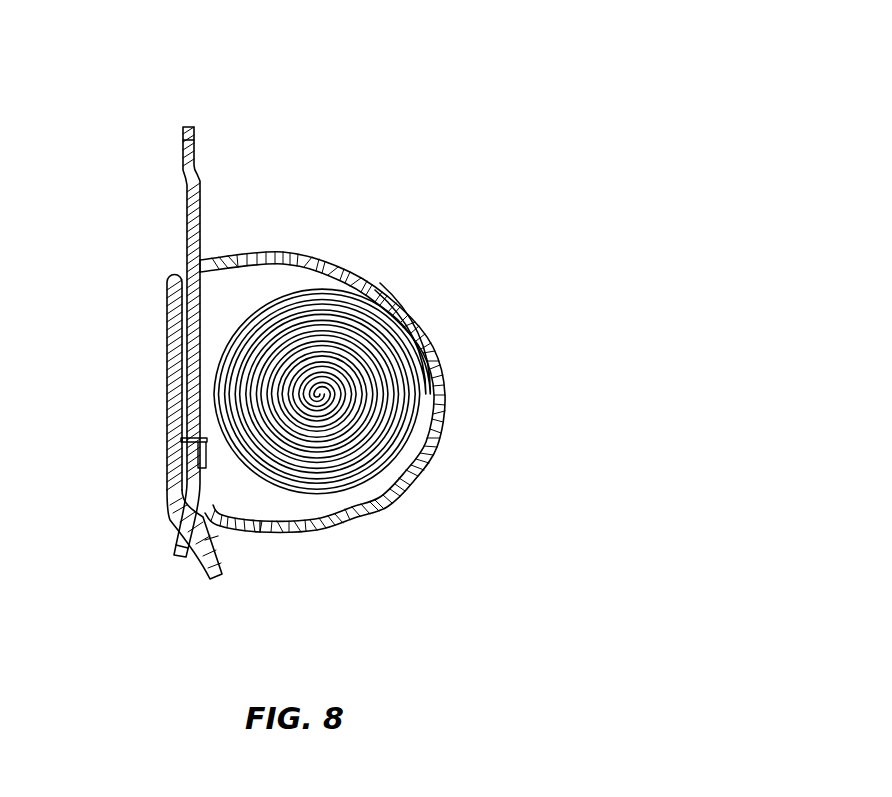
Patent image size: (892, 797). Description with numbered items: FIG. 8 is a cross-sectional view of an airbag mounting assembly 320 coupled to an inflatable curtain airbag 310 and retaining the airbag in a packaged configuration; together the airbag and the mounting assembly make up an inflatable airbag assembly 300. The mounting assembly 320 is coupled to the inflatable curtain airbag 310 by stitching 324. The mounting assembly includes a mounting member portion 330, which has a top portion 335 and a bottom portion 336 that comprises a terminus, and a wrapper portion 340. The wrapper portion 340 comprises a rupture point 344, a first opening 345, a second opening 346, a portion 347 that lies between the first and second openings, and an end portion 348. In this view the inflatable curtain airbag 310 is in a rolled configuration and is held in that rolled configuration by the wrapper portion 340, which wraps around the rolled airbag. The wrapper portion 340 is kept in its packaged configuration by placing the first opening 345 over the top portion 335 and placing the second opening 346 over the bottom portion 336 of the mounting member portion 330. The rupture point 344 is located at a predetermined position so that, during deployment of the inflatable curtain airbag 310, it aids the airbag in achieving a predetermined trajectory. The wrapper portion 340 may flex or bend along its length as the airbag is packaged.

The inflatable airbag assembly 300 is at (422, 94).
The inflatable curtain airbag 310 is at (420, 403).
The airbag mounting assembly 320 is at (243, 208).
The stitching 324 is at (180, 448).
The mounting member portion 330 is at (166, 235).
The top portion 335 is at (183, 147).
The bottom portion 336 is at (173, 553).
The wrapper portion 340 is at (367, 263).
The rupture point 344 is at (357, 513).
The first opening 345 is at (203, 258).
The second opening 346 is at (187, 513).
The portion between the first and second openings 347 is at (166, 403).
The end portion 348 is at (226, 558).